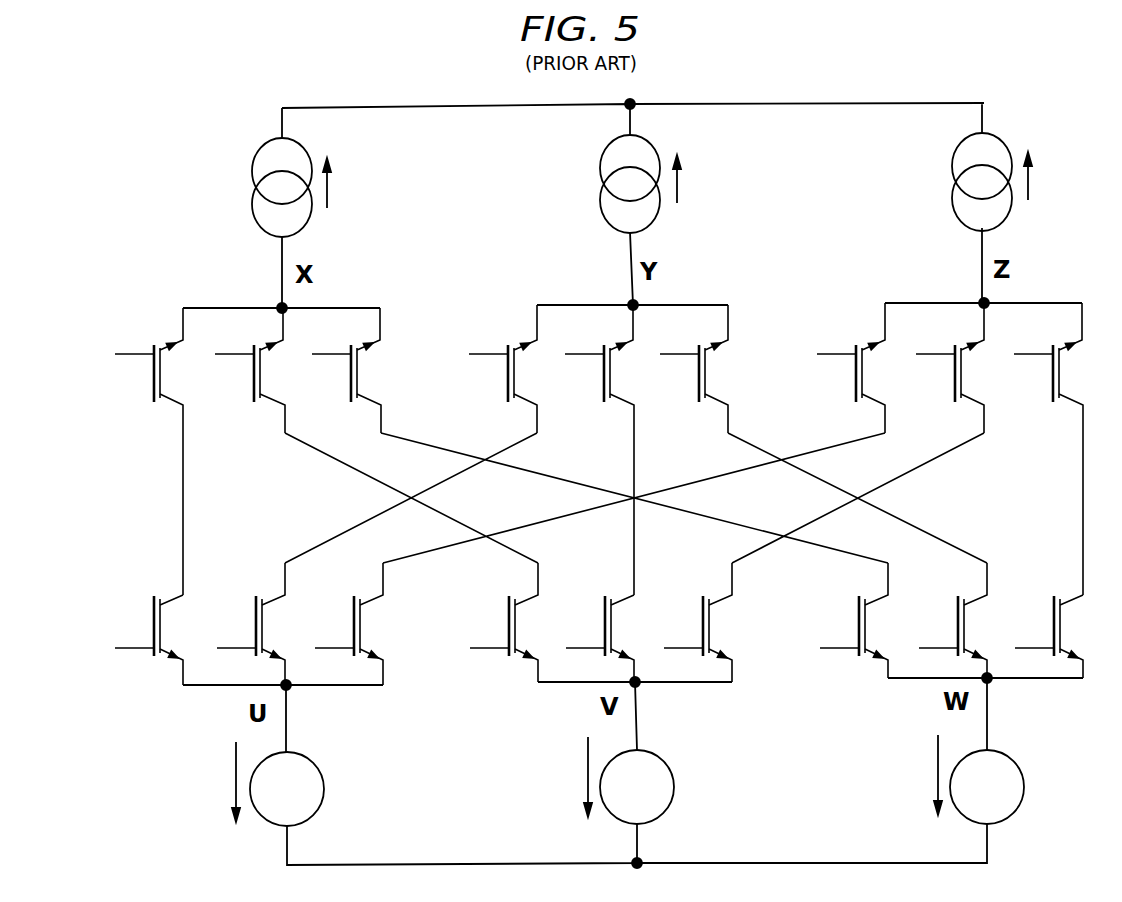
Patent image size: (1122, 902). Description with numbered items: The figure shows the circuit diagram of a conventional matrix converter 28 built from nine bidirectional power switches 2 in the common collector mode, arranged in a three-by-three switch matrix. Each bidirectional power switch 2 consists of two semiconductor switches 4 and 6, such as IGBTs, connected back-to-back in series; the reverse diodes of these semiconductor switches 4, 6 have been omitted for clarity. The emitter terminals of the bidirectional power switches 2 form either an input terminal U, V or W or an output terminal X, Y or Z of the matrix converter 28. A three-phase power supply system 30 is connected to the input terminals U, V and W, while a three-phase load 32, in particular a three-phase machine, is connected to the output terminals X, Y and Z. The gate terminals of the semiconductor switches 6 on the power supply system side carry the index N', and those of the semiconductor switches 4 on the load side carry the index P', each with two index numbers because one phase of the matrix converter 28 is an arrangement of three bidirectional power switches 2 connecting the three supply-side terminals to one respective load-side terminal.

The bidirectional power switch 2 is at (183, 478).
The semiconductor switch 4 is at (166, 398).
The semiconductor switch 6 is at (170, 607).
The matrix converter 28 is at (818, 782).
The three-phase power supply system 30 is at (423, 865).
The three-phase load 32 is at (455, 107).